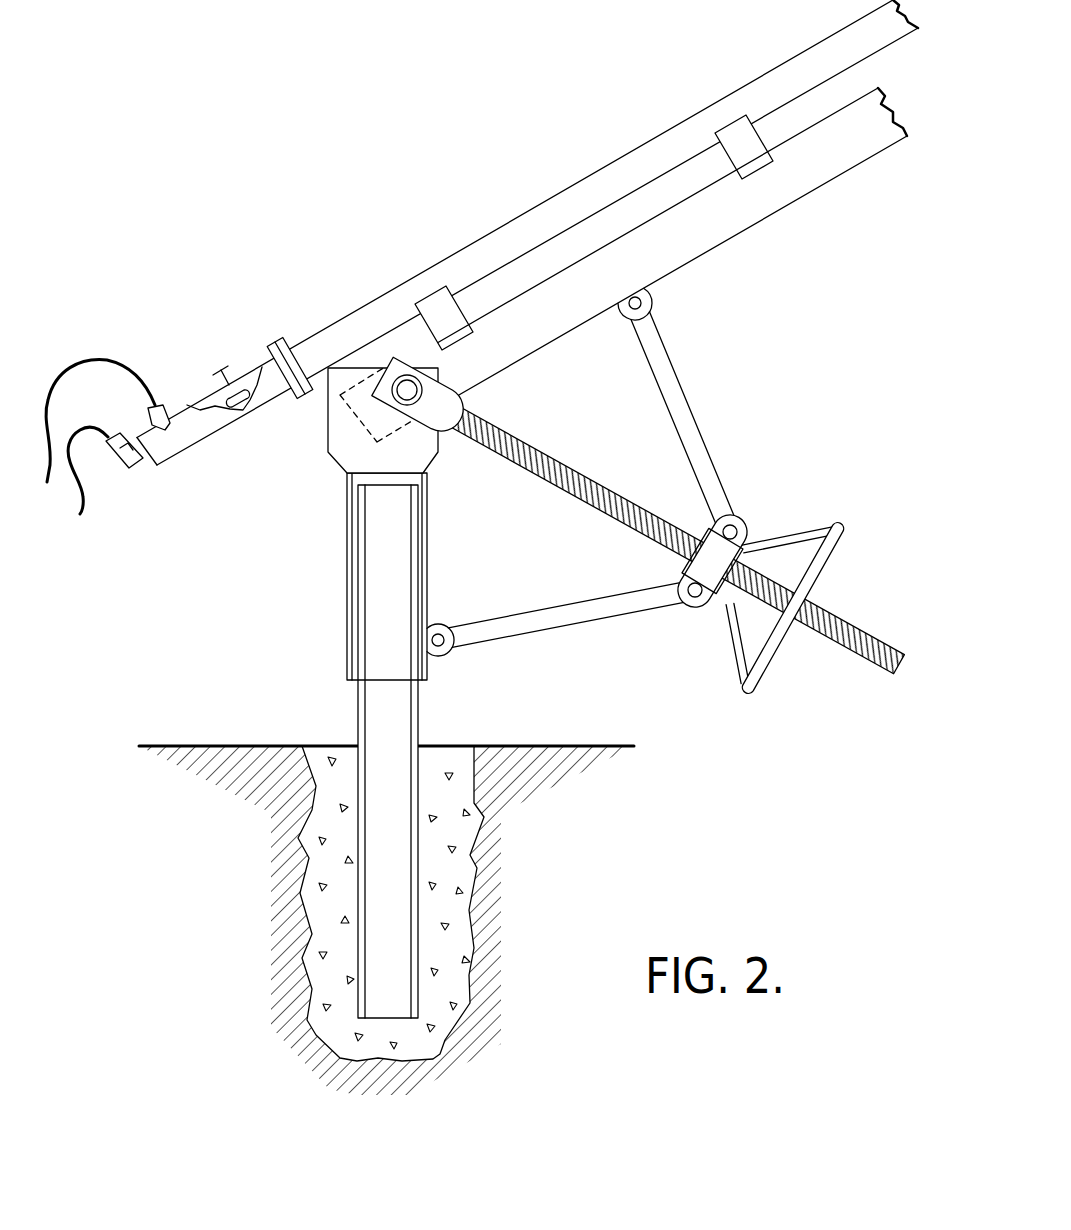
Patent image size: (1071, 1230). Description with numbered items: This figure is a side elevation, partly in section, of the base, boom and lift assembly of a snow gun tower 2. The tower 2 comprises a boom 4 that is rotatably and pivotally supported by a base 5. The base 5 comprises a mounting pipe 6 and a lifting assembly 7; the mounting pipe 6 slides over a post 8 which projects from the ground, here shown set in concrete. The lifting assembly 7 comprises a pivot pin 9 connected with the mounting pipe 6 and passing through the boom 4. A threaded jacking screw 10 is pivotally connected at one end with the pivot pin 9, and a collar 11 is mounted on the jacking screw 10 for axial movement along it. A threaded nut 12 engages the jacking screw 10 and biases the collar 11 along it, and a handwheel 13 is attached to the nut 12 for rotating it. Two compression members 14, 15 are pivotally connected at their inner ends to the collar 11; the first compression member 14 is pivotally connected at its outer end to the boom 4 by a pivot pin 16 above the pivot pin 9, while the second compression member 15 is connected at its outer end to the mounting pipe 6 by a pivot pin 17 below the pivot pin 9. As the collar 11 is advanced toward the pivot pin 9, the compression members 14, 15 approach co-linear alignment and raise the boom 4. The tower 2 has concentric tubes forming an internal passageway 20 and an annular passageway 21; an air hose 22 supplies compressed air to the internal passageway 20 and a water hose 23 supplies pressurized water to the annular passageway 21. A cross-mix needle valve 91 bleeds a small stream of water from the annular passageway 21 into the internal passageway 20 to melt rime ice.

The tower 2 is at (798, 66).
The boom 4 is at (813, 180).
The base 5 is at (316, 493).
The mounting pipe 6 is at (345, 550).
The lifting assembly 7 is at (762, 428).
The post 8 is at (358, 735).
The pivot pin 9 is at (421, 397).
The jacking screw 10 is at (857, 627).
The collar 11 is at (703, 567).
The nut 12 is at (757, 557).
The handwheel 13 is at (773, 657).
The first compression member 14 is at (673, 380).
The second compression member 15 is at (575, 622).
The pivot pin 16 is at (652, 303).
The pivot pin 17 is at (445, 653).
The internal passageway 20 is at (257, 403).
The annular passageway 21 is at (200, 402).
The air hose 22 is at (86, 485).
The water hose 23 is at (88, 362).
The cross-mix needle valve 91 is at (238, 368).